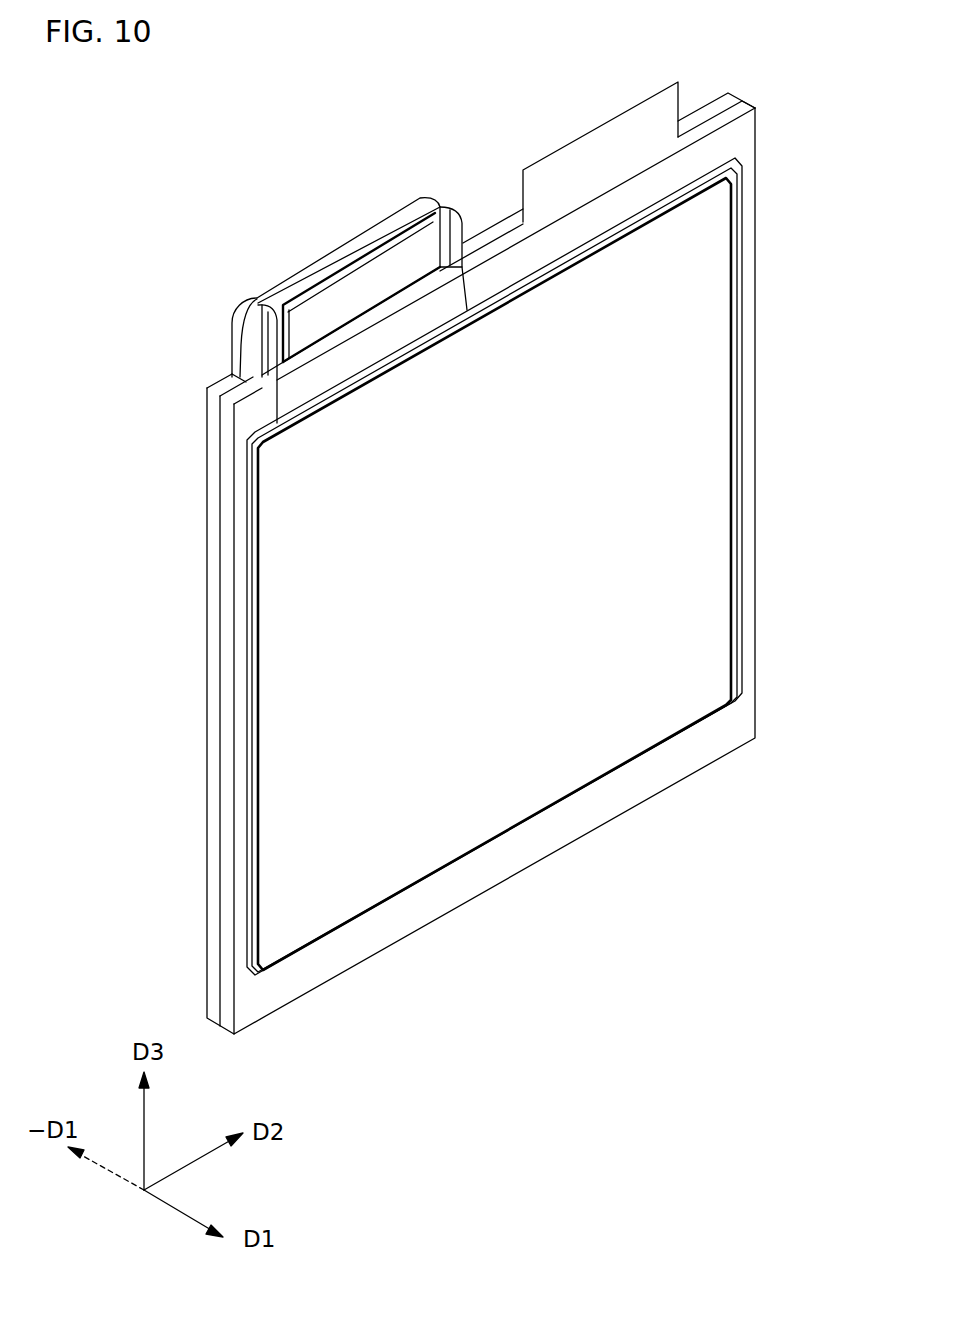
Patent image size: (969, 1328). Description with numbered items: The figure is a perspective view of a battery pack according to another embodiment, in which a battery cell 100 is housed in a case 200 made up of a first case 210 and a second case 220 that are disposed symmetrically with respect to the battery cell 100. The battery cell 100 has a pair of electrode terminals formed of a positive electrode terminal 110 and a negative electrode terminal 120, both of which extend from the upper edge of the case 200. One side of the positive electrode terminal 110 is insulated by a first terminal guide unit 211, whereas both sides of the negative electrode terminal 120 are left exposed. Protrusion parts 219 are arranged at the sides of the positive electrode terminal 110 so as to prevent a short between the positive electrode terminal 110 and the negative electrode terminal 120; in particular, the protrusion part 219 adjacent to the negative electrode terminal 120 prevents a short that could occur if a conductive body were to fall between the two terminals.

The battery cell 100 is at (705, 424).
The positive electrode terminal 110 is at (377, 277).
The negative electrode terminal 120 is at (603, 150).
The case 200 is at (403, 563).
The first case 210 is at (212, 630).
The second case 220 is at (228, 667).
The first terminal guide unit 211 is at (243, 317).
The protrusion part 219 is at (267, 342).